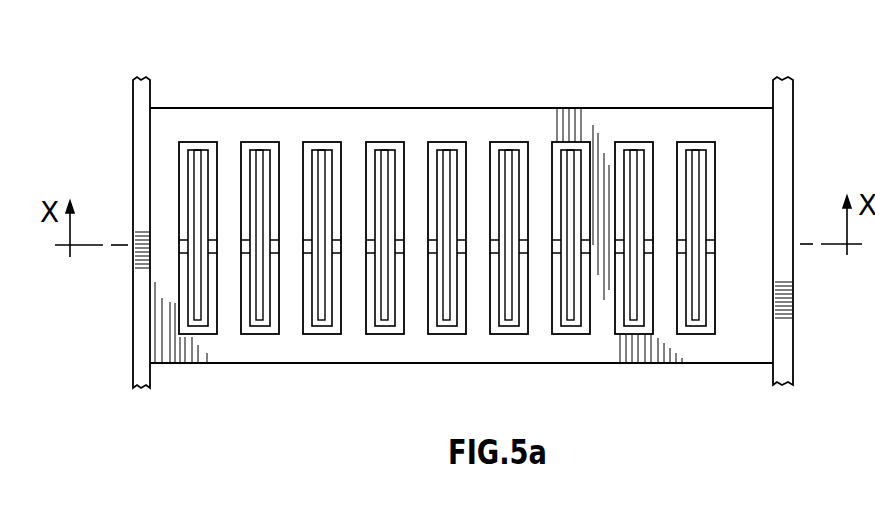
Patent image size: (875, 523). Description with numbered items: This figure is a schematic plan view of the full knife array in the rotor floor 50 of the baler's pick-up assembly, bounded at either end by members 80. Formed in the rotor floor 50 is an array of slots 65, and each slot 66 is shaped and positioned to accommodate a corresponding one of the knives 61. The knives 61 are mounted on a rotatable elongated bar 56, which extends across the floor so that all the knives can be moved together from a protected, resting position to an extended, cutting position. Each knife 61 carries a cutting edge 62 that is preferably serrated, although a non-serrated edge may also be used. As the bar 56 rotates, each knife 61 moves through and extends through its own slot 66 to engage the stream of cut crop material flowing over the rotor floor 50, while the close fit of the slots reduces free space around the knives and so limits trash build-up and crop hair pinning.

The rotor floor 50 is at (663, 124).
The end clamping bar 80 is at (141, 163).
The rotatable elongated bar 56 is at (310, 243).
The knife 61 is at (442, 136).
The cutting edge 62 is at (505, 150).
The slot 66 is at (437, 336).
The array of slots 65 is at (738, 194).